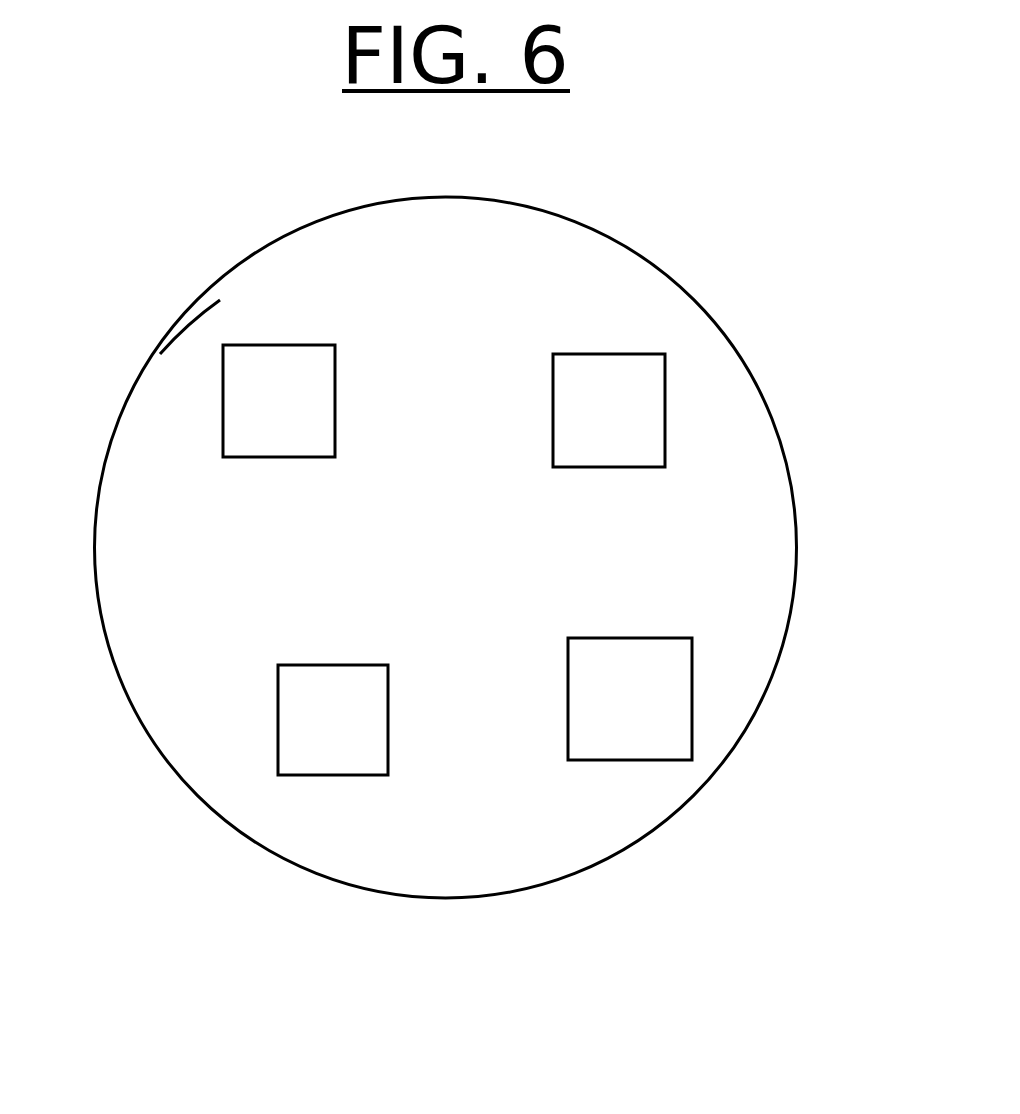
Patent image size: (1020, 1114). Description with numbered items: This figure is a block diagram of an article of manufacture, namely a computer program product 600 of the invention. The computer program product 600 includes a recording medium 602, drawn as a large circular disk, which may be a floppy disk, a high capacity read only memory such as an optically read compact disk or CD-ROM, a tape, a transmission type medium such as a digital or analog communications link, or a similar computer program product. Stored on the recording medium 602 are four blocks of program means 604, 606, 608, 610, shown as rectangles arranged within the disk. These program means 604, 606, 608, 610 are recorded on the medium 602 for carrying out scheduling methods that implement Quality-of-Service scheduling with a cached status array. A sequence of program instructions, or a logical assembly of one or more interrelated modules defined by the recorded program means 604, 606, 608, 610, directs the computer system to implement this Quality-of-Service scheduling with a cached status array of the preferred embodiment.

The computer program product 600 is at (745, 312).
The recording medium 602 is at (153, 348).
The program means 604 is at (333, 720).
The program means 606 is at (630, 699).
The program means 608 is at (609, 410).
The program means 610 is at (279, 401).